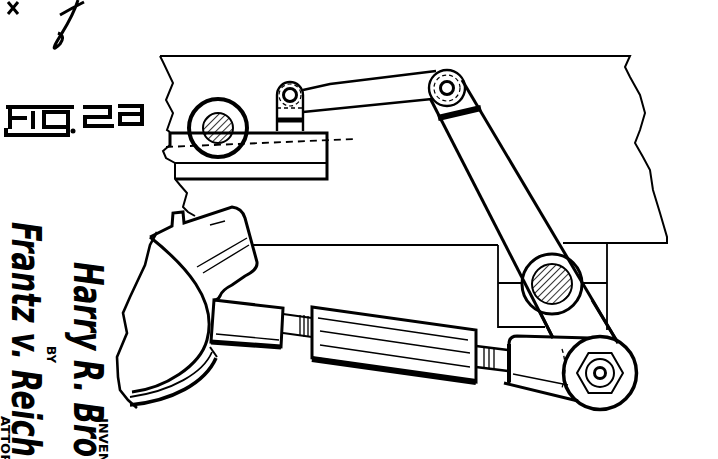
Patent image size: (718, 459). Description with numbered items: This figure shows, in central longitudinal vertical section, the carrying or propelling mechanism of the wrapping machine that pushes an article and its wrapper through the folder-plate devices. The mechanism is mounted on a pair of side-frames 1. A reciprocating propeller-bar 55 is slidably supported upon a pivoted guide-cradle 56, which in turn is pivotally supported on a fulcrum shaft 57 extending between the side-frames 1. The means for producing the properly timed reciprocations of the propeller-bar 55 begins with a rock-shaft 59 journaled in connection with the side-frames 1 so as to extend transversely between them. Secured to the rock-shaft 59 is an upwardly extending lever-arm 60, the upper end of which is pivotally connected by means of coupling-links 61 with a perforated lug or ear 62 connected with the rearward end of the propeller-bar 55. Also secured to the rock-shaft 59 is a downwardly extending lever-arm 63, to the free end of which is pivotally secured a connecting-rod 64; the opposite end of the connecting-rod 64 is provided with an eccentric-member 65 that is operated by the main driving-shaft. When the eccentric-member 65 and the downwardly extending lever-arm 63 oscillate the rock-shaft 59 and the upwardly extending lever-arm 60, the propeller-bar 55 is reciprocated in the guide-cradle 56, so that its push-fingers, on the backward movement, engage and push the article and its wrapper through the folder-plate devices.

The side-frames 1 is at (566, 58).
The propeller-bar 55 is at (274, 136).
The guide-cradle 56 is at (308, 167).
The fulcrum shaft 57 is at (232, 113).
The rock-shaft 59 is at (578, 272).
The upwardly extending lever-arm 60 is at (521, 174).
The coupling-links 61 is at (408, 98).
The perforated lug or ear 62 is at (330, 72).
The downwardly extending lever-arm 63 is at (587, 322).
The connecting-rod 64 is at (413, 376).
The eccentric-member 65 is at (207, 362).